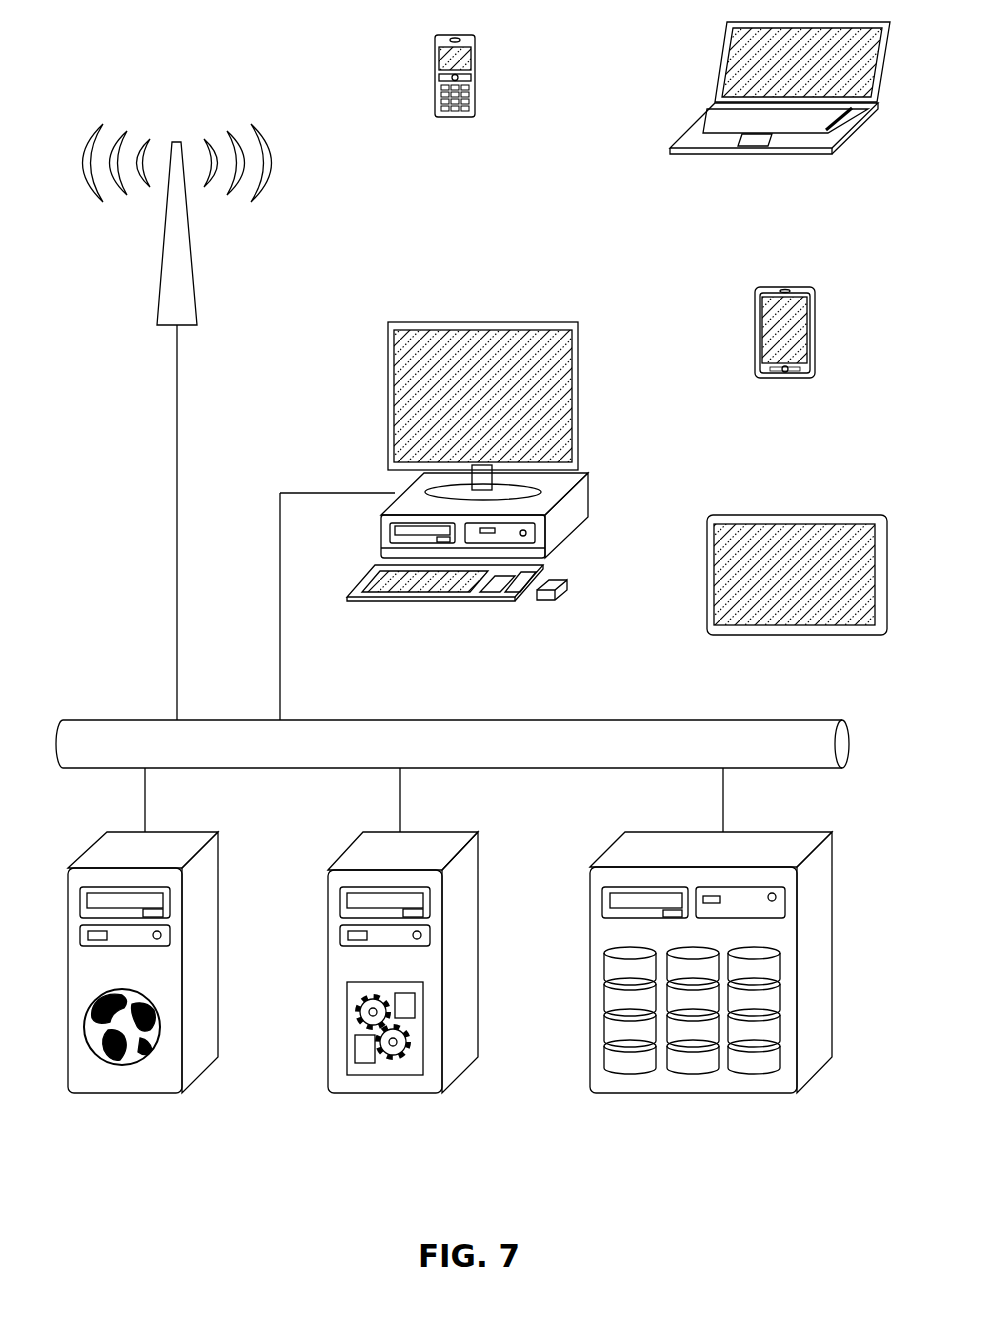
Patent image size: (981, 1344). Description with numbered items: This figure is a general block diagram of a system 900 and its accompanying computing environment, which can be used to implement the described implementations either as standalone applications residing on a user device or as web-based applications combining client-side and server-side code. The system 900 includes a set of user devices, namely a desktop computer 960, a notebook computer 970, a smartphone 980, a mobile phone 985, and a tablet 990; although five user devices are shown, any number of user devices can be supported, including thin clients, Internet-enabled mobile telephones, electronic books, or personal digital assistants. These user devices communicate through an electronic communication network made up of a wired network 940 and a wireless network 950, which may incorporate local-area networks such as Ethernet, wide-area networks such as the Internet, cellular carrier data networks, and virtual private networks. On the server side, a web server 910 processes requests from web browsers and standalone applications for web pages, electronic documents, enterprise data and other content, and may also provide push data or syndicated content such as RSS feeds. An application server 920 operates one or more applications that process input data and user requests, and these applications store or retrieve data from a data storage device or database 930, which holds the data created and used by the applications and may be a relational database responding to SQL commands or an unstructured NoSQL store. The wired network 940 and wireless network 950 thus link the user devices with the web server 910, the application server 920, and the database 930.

The system 900 is at (135, 58).
The web server 910 is at (132, 1083).
The application server 920 is at (387, 1083).
The data storage device or database 930 is at (685, 1075).
The wired network 940 is at (452, 776).
The wireless network 950 is at (205, 232).
The desktop computer 960 is at (468, 605).
The notebook computer 970 is at (785, 195).
The smartphone 980 is at (790, 393).
The mobile phone 985 is at (458, 135).
The tablet 990 is at (790, 632).